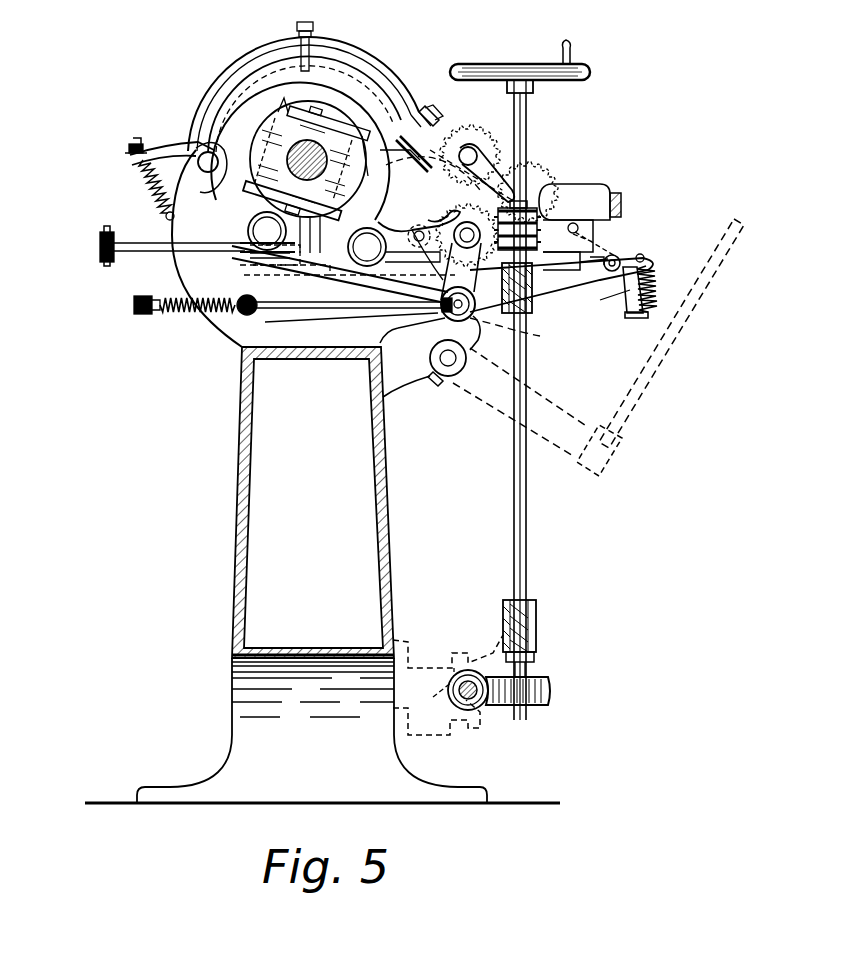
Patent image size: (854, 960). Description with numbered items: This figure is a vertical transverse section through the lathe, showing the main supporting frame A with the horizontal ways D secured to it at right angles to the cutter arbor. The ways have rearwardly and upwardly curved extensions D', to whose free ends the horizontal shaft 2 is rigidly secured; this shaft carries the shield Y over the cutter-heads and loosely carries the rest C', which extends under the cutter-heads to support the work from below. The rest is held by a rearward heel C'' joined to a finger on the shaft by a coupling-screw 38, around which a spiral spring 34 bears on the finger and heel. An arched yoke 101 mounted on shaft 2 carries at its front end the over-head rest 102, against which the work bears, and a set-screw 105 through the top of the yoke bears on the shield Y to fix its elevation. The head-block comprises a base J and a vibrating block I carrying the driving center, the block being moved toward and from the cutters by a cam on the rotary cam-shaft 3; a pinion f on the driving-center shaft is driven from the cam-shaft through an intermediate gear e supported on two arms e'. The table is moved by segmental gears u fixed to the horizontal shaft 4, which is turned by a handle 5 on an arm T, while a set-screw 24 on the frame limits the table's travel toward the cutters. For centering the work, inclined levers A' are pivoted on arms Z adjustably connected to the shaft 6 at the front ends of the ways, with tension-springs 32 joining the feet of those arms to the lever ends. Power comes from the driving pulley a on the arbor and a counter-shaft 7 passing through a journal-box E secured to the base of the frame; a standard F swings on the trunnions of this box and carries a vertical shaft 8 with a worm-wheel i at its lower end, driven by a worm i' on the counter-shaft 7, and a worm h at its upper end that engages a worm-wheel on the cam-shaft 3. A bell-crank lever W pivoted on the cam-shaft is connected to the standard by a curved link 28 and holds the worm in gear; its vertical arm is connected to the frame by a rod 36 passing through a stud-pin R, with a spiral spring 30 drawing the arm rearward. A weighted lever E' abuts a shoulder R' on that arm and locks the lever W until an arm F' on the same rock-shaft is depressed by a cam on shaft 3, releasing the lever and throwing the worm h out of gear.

The set-screw 105 is at (314, 28).
The arched yoke 101 is at (384, 70).
The shield Y is at (303, 128).
The vibrating block I is at (431, 162).
The heel C'' is at (172, 140).
The horizontal shaft 2 is at (205, 168).
The coupling-screw 38 is at (134, 144).
The spiral spring 34 is at (146, 190).
The main supporting frame A is at (322, 476).
The curved extensions D' is at (203, 239).
The set-screw 24 is at (160, 252).
The spiral spring 30 is at (184, 316).
The stud-pin R is at (250, 314).
The rod 36 is at (330, 308).
The lever E' is at (343, 275).
The bell-crank lever W is at (344, 239).
The curved link 28 is at (422, 208).
The rest C' is at (433, 179).
The cam-shaft 3 is at (466, 232).
The pinion f is at (476, 132).
The arms e' is at (486, 173).
The intermediate gear e is at (528, 185).
The over-head rest 102 is at (444, 124).
The levers A' is at (446, 168).
The vertical shaft 8 is at (526, 135).
The standard F is at (526, 265).
The base J is at (579, 238).
The driving pulley a is at (561, 261).
The horizontal ways D is at (561, 285).
The shaft 6 is at (610, 270).
The arms Z is at (629, 294).
The spiral tension-springs 32 is at (654, 275).
The handle or lever 5 is at (653, 362).
The arm T is at (484, 398).
The worm h is at (480, 274).
The segmental gears u is at (472, 322).
The horizontal shaft 4 is at (440, 358).
The shoulder R' is at (351, 322).
The arm F' is at (536, 631).
The worm-wheel i is at (528, 683).
The counter-shaft 7 is at (475, 697).
The journal-box E is at (448, 689).
The worm i' is at (439, 662).